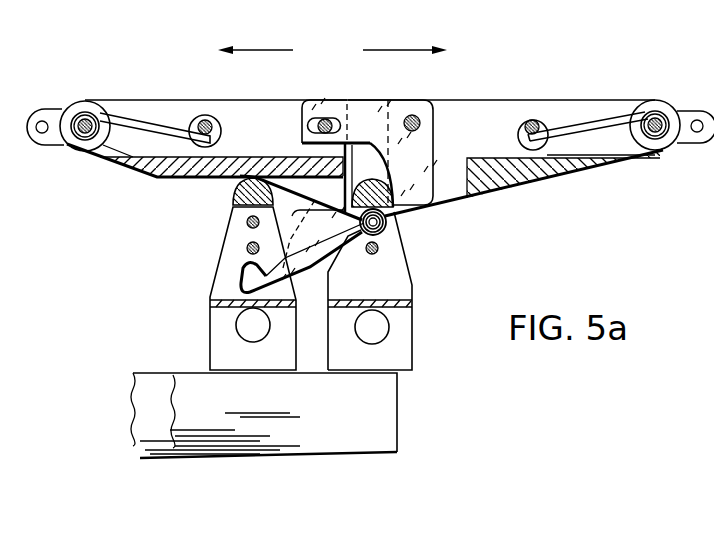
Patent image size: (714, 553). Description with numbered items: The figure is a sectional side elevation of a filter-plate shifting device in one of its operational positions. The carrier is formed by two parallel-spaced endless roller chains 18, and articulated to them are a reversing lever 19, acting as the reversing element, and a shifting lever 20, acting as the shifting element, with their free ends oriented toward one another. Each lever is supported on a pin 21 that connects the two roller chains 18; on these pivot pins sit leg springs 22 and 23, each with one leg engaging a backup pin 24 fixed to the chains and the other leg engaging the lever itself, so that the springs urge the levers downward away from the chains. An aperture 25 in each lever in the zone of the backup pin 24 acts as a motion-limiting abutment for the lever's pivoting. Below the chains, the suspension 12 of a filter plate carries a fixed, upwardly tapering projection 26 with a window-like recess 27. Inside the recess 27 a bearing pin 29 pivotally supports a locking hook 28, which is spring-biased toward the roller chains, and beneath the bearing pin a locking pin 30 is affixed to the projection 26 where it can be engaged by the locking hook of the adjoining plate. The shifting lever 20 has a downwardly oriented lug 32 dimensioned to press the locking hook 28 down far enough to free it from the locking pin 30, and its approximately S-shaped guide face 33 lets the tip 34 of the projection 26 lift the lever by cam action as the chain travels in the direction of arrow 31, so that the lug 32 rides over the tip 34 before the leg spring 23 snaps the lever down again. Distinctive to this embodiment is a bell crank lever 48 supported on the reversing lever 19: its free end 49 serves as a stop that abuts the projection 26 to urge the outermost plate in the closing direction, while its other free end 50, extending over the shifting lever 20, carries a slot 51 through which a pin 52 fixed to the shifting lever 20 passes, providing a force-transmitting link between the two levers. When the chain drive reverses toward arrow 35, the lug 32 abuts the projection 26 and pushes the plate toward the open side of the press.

The suspension 12 is at (190, 446).
The roller chain 18 is at (51, 150).
The reversing lever 19 is at (578, 163).
The shifting lever 20 is at (124, 110).
The pin 21 is at (84, 118).
The leg spring 22 is at (590, 118).
The leg spring 23 is at (168, 127).
The backup pin 24 is at (204, 120).
The aperture 25 is at (219, 136).
The projection 26 is at (340, 345).
The window-like recess 27 is at (397, 285).
The locking hook 28 is at (388, 234).
The bearing pin 29 is at (388, 226).
The locking pin 30 is at (246, 248).
The arrow 31 is at (254, 50).
The lug 32 is at (322, 188).
The guide face 33 is at (168, 180).
The tip 34 is at (374, 152).
The arrow 35 is at (386, 50).
The bell crank lever 48 is at (398, 110).
The free end 49 is at (432, 178).
The free end 50 is at (308, 111).
The slot 51 is at (347, 128).
The pin 52 is at (326, 119).